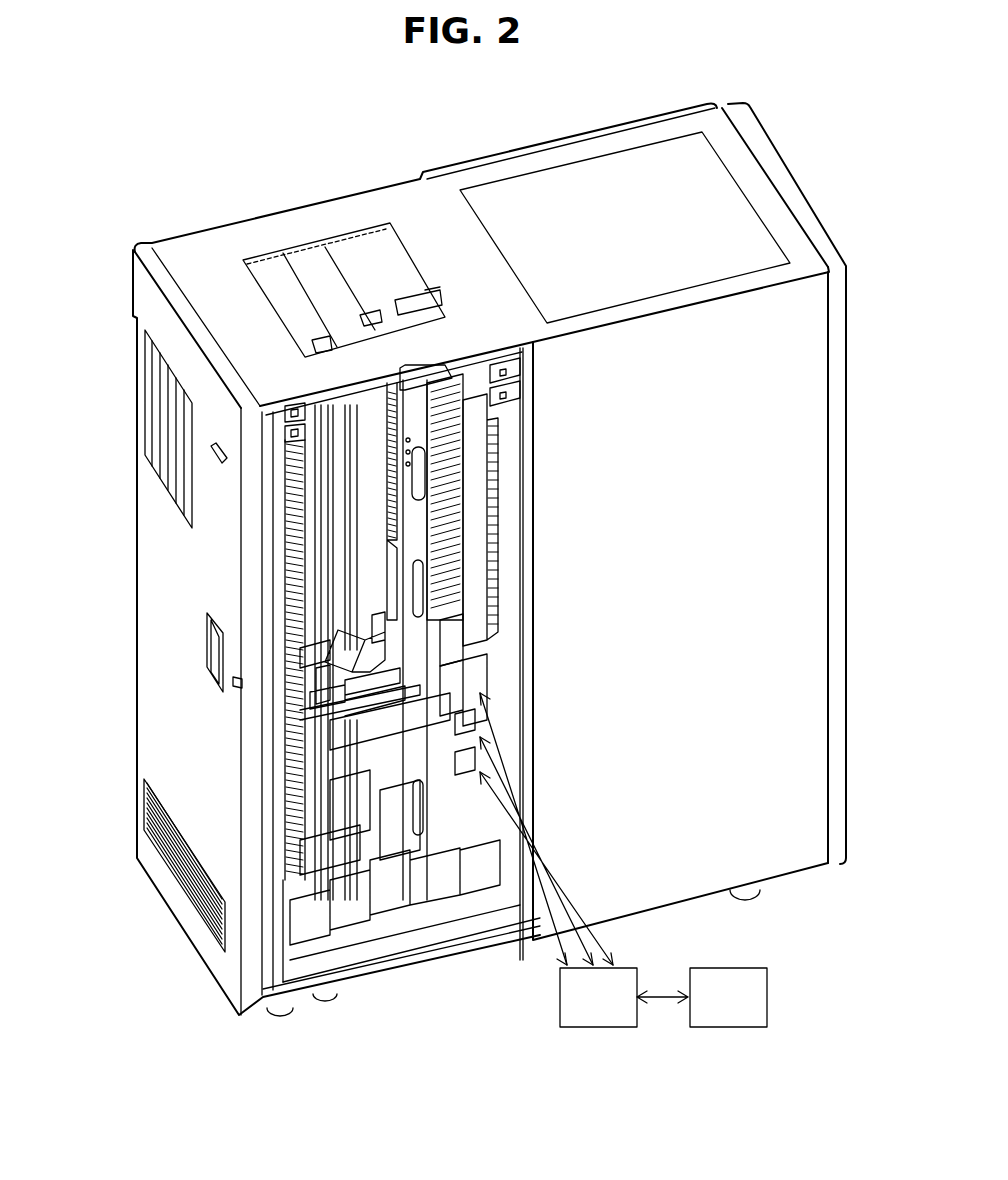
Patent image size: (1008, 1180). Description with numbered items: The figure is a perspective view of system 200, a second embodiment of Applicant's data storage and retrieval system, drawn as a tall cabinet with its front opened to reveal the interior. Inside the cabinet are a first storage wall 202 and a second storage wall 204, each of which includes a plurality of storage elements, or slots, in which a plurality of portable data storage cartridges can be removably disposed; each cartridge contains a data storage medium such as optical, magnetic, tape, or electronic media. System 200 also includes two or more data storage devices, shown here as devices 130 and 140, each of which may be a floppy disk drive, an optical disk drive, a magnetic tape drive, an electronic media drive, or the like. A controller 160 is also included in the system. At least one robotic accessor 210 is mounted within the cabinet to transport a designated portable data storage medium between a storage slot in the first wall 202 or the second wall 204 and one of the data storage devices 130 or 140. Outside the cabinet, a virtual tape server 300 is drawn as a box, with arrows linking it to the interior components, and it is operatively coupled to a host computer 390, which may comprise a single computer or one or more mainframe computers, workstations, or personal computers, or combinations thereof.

The system 200 is at (313, 1012).
The first storage wall 202 is at (475, 462).
The second storage wall 204 is at (282, 542).
The robotic accessor 210 is at (283, 667).
The data storage device 130 is at (463, 722).
The data storage device 140 is at (463, 760).
The controller 160 is at (472, 678).
The virtual tape server 300 is at (598, 997).
The host computer 390 is at (702, 997).